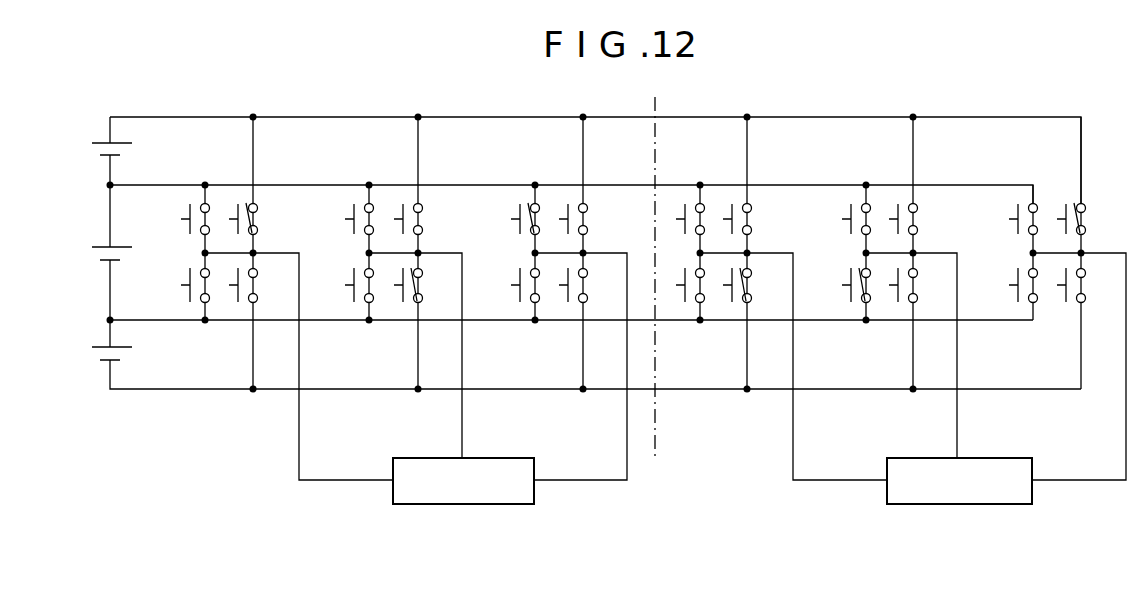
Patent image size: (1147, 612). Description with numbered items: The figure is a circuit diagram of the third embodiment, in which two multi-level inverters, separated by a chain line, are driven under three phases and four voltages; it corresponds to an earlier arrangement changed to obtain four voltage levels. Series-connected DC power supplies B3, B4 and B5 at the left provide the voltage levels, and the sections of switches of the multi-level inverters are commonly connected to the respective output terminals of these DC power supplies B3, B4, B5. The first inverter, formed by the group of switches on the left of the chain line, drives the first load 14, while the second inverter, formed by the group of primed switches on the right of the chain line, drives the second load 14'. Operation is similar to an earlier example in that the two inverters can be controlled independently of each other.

The first load 14 is at (463, 507).
The second load 14' is at (959, 507).
The battery B3 is at (95, 359).
The battery B4 is at (95, 261).
The battery B5 is at (95, 152).